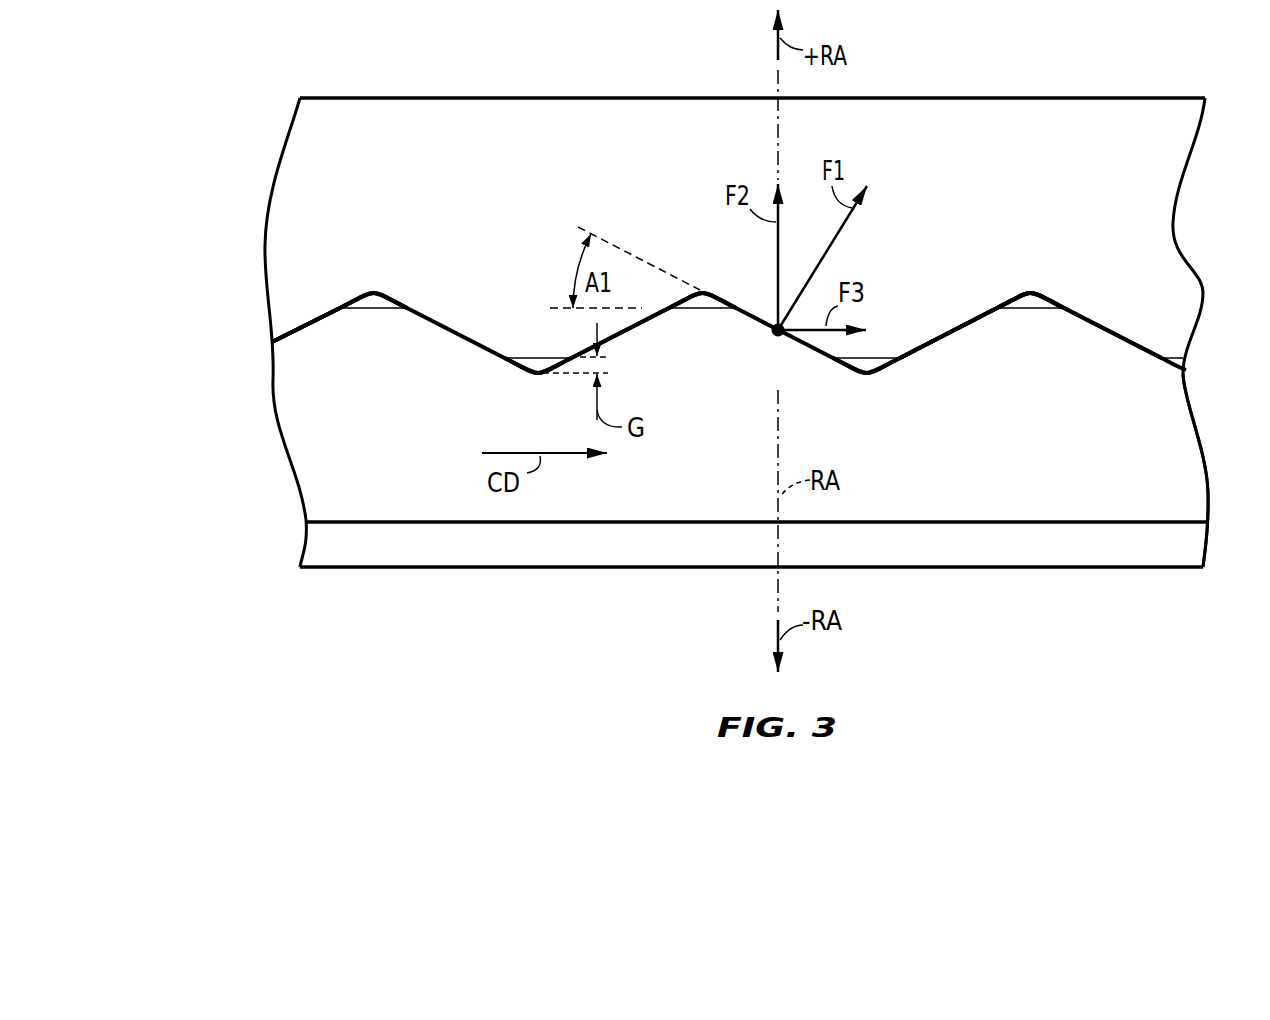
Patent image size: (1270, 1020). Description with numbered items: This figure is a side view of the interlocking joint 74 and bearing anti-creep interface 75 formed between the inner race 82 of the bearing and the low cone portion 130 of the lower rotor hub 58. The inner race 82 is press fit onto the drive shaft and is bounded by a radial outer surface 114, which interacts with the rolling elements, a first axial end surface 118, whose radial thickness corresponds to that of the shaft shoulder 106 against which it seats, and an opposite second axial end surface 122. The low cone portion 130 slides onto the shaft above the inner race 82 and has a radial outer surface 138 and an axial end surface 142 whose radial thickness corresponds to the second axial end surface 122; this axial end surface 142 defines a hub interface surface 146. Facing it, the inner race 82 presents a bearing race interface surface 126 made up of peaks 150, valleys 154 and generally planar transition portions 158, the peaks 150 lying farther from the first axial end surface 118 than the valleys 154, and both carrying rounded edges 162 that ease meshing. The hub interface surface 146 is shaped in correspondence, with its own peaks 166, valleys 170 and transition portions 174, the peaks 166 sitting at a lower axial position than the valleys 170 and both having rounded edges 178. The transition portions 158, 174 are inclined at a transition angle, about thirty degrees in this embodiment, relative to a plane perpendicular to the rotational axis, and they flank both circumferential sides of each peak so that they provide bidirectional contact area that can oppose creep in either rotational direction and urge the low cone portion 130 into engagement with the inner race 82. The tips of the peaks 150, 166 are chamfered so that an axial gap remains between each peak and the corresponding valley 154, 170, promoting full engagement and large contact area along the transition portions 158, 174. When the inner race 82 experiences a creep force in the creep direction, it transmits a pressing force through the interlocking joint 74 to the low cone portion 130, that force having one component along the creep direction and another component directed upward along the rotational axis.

The lower rotor hub 58 is at (405, 147).
The interlocking joint 74 is at (666, 333).
The bearing anti-creep interface 75 is at (268, 349).
The inner race 82 is at (418, 488).
The shoulder 106 is at (377, 545).
The radial outer surface 114 is at (1127, 442).
The first axial end surface 118 is at (953, 525).
The second axial end surface 122 is at (248, 381).
The bearing race interface surface 126 is at (302, 337).
The low cone portion 130 is at (269, 142).
The radial outer surface 138 is at (1135, 180).
The axial end surface 142 is at (242, 290).
The hub interface surface 146 is at (319, 309).
The peaks 150 is at (700, 314).
The valleys 154 is at (660, 413).
The transition portions 158 is at (757, 338).
The rounded edges 162 is at (531, 375).
The peaks 166 is at (530, 349).
The valleys 170 is at (707, 287).
The transition portions 174 is at (944, 319).
The rounded edges 178 is at (1041, 285).